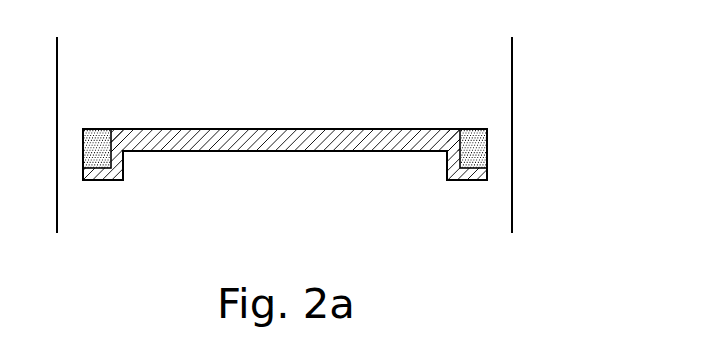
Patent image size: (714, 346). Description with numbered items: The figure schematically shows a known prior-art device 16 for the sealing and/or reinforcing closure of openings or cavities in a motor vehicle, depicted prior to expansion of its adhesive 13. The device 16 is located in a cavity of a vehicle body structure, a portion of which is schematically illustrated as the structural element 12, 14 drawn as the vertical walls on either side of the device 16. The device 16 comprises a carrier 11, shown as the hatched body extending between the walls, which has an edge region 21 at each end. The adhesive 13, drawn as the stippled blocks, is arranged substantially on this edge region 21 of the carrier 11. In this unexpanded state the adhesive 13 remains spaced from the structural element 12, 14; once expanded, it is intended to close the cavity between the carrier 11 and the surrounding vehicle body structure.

The carrier 11 is at (278, 142).
The structural element 12 is at (352, 150).
The adhesive 13 is at (97, 128).
The structural element 14 is at (513, 200).
The device 16 is at (285, 143).
The edge region 21 is at (100, 168).